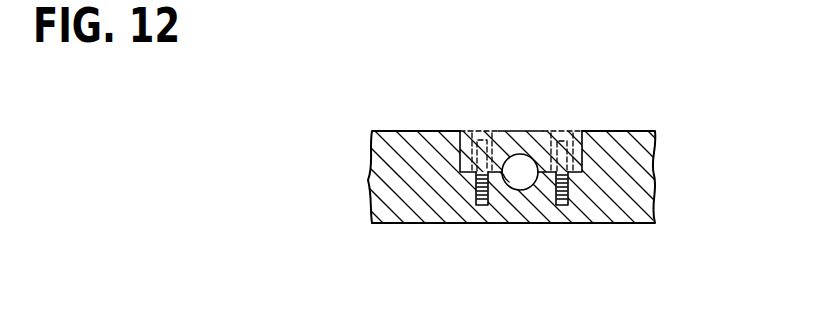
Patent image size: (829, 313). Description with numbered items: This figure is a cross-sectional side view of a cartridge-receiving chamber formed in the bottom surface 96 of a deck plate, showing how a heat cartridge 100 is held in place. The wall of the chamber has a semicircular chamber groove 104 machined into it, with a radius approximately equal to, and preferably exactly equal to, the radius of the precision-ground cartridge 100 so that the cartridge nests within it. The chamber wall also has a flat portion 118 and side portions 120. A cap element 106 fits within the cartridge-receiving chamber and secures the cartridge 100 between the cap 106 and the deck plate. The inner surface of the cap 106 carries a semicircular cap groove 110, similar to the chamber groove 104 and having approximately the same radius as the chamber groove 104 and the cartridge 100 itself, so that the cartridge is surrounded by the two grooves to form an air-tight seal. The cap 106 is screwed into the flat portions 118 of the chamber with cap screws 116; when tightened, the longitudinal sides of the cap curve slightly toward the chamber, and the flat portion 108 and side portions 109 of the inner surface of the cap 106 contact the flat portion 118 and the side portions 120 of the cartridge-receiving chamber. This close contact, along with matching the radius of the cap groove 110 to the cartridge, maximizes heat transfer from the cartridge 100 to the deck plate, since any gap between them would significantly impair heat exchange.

The bottom surface 96 is at (410, 131).
The heat cartridge 100 is at (505, 178).
The chamber groove 104 is at (522, 190).
The cap element 106 is at (585, 131).
The flat portion of the inner surface of the cap 108 is at (496, 158).
The side portions of the inner surface of the cap 109 is at (468, 140).
The cap groove 110 is at (526, 153).
The cap screw 116 is at (468, 136).
The flat portion of the cartridge-receiving chamber 118 is at (548, 178).
The side portions of the cartridge-receiving chamber 120 is at (472, 155).